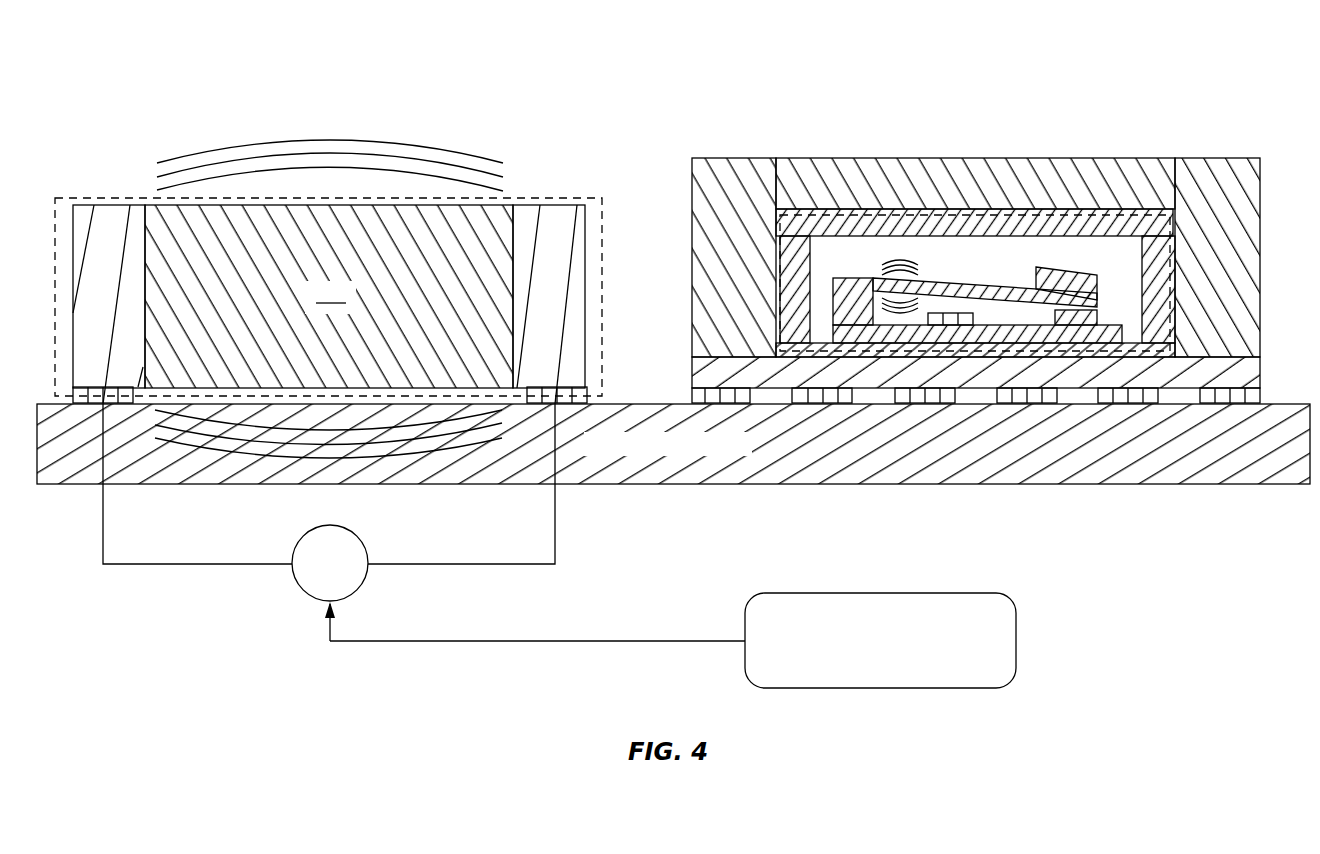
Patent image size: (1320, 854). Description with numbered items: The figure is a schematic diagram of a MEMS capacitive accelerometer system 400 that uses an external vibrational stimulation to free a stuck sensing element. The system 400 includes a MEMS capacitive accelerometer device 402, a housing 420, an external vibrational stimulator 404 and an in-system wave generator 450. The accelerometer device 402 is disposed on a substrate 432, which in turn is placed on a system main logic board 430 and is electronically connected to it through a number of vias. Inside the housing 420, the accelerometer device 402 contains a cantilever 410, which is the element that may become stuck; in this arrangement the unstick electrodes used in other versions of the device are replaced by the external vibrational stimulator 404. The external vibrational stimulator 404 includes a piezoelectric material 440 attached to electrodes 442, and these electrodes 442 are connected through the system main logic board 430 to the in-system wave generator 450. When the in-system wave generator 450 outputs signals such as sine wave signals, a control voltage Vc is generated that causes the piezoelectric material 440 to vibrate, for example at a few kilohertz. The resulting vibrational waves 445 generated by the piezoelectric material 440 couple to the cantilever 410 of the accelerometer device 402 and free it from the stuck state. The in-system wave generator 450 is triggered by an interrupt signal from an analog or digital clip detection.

The MEMS capacitive accelerometer system 400 is at (131, 40).
The MEMS capacitive accelerometer device 402 is at (925, 207).
The external vibrational stimulator 404 is at (562, 197).
The cantilever 410 is at (993, 283).
The housing 420 is at (1213, 158).
The system main logic board 430 is at (672, 484).
The substrate 432 is at (692, 370).
The piezoelectric material 440 is at (346, 303).
The electrodes 442 is at (100, 203).
The vibrational waves 445 is at (212, 150).
The in-system wave generator 450 is at (932, 593).